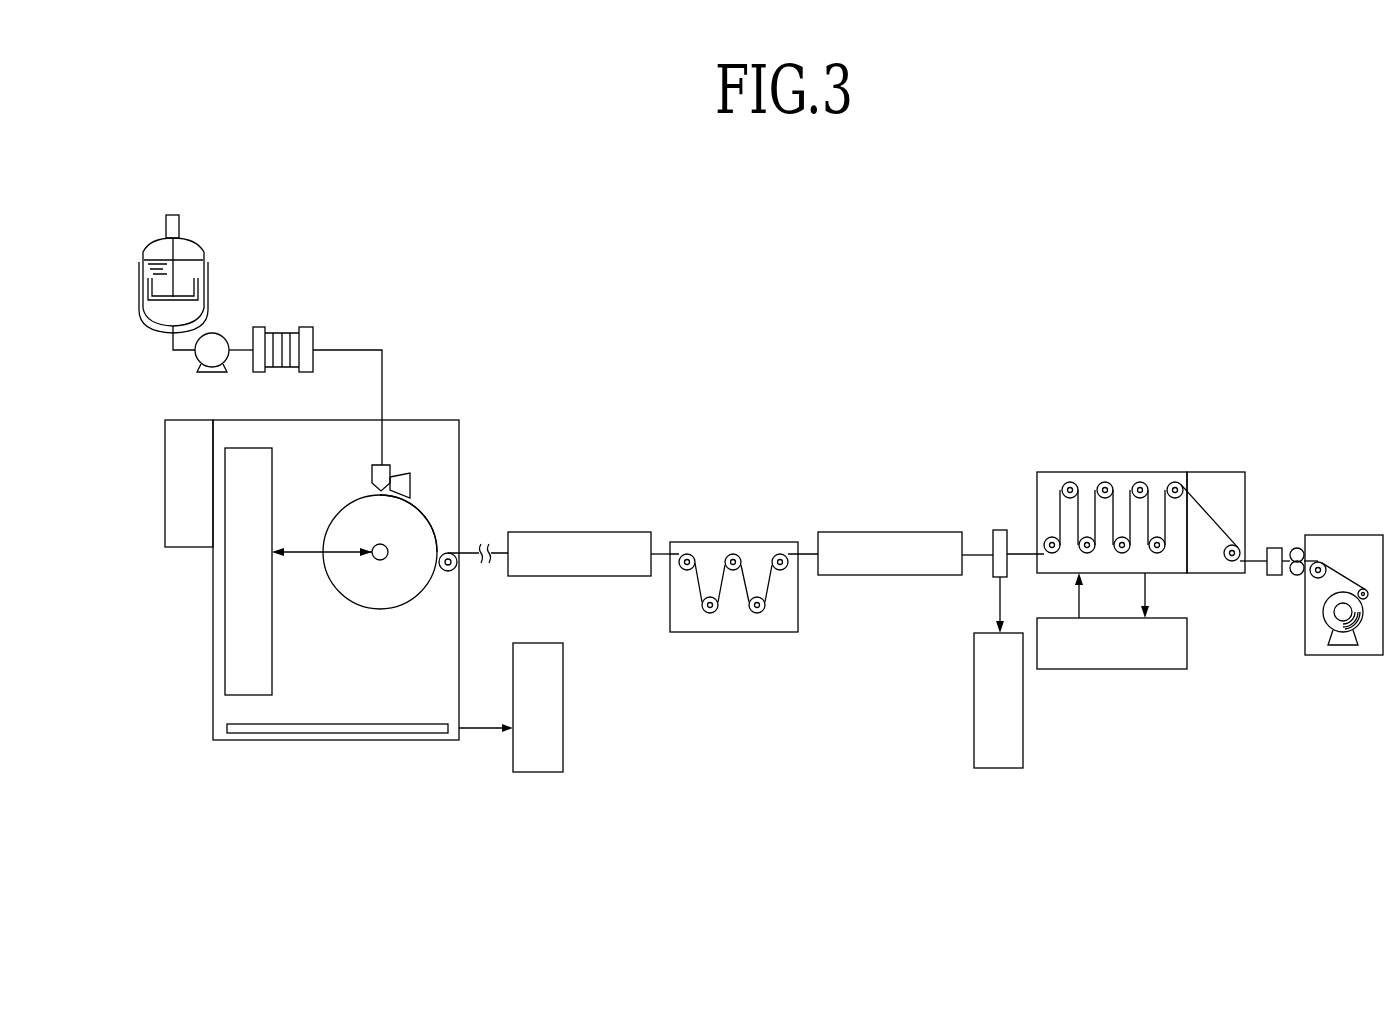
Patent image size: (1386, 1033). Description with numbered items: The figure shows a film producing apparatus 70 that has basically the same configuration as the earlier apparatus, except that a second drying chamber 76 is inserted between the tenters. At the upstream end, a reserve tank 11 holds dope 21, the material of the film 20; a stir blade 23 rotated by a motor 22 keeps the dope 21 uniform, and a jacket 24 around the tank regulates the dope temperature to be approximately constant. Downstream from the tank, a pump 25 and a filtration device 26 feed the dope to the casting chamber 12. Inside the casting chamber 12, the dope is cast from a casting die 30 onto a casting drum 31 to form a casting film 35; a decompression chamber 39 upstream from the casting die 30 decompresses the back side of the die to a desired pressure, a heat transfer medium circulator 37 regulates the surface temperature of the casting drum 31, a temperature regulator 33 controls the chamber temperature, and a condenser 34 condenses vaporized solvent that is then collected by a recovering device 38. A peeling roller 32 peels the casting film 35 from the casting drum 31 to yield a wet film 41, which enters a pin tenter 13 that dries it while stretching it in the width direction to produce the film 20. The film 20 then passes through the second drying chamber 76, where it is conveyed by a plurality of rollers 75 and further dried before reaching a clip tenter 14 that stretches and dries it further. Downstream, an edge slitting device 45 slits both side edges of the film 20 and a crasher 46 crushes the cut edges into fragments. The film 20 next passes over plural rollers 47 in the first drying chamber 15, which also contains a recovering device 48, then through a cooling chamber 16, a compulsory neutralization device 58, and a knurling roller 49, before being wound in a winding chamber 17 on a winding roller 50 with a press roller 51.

The reserve tank 11 is at (193, 239).
The casting chamber 12 is at (213, 690).
The pin tenter 13 is at (581, 530).
The clip tenter 14 is at (840, 532).
The drying chamber 15 is at (1160, 472).
The cooling chamber 16 is at (1220, 472).
The winding chamber 17 is at (1352, 535).
The film 20 is at (660, 556).
The dope 21 is at (197, 268).
The motor 22 is at (172, 213).
The stir blade 23 is at (148, 298).
The jacket 24 is at (139, 268).
The pump 25 is at (195, 357).
The filtration device 26 is at (288, 370).
The casting die 30 is at (370, 469).
The casting drum 31 is at (380, 608).
The peeling roller 32 is at (447, 573).
The temperature regulator 33 is at (188, 548).
The condenser 34 is at (337, 734).
The casting film 35 is at (335, 589).
The heat transfer medium circulator 37 is at (272, 483).
The recovering device 38 is at (538, 773).
The decompression chamber 39 is at (403, 474).
The wet film 41 is at (483, 550).
The edge slitting device 45 is at (1000, 530).
The crasher 46 is at (997, 769).
The rollers 47 is at (1140, 481).
The recovering device 48 is at (1110, 670).
The knurling roller 49 is at (1296, 548).
The winding roller 50 is at (1340, 612).
The press roller 51 is at (1365, 589).
The compulsory neutralization device 58 is at (1275, 548).
The film producing apparatus 70 is at (872, 322).
The rollers 75 is at (780, 553).
The second drying chamber 76 is at (733, 633).